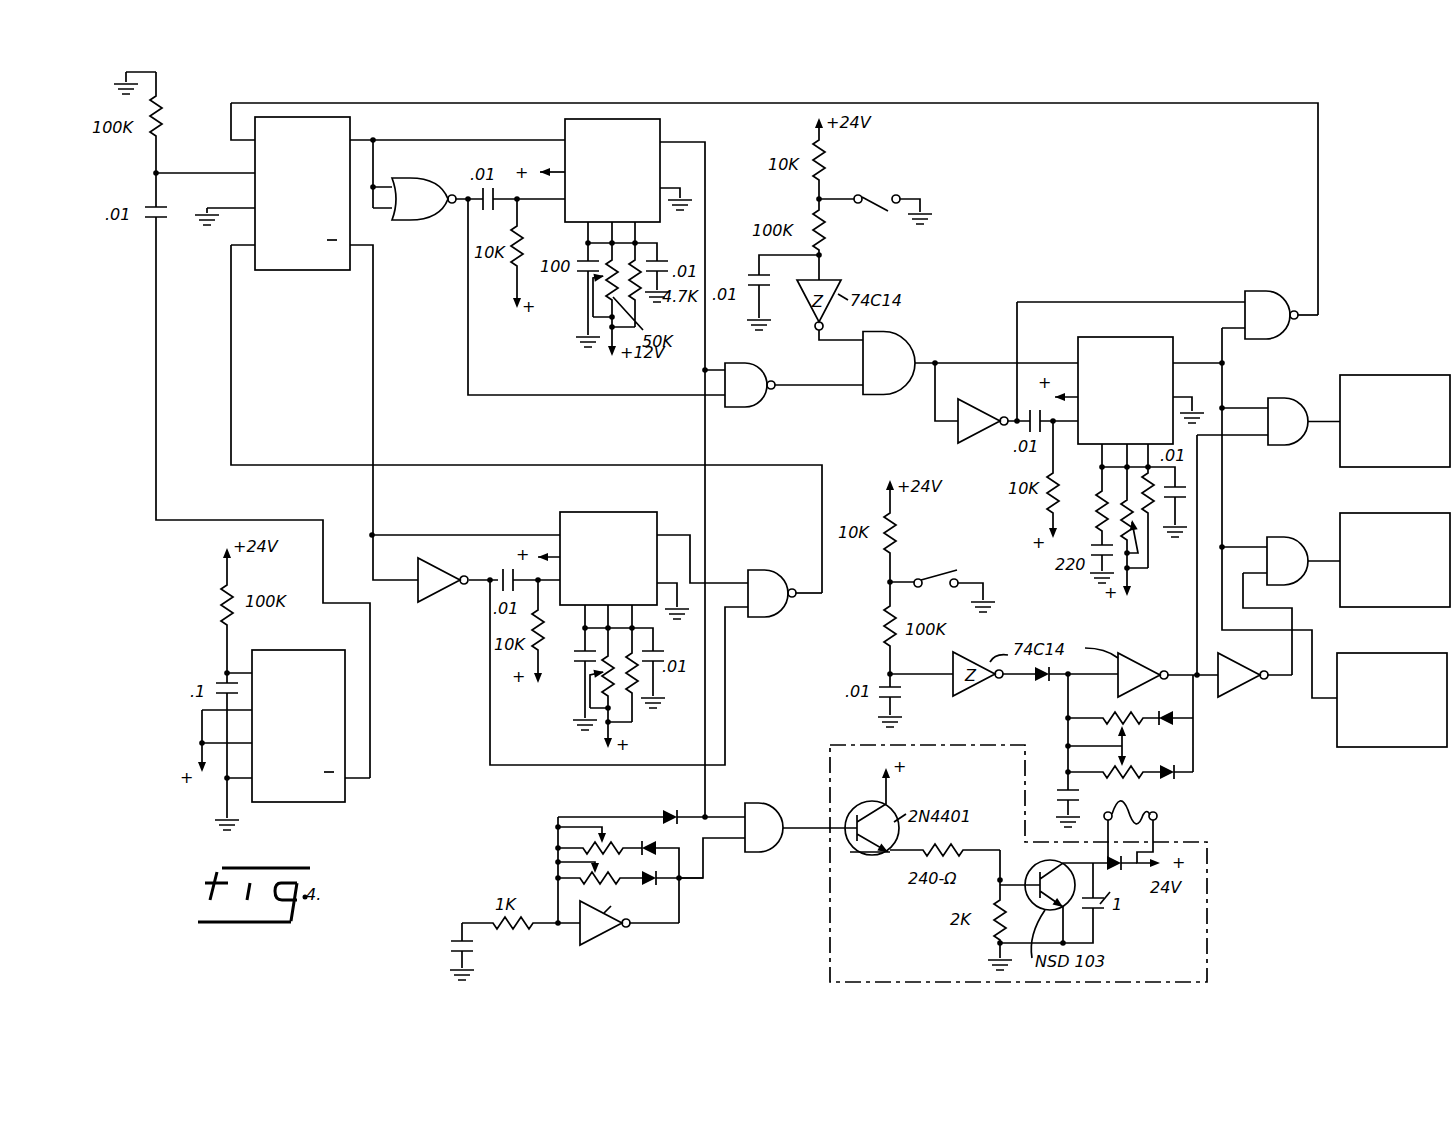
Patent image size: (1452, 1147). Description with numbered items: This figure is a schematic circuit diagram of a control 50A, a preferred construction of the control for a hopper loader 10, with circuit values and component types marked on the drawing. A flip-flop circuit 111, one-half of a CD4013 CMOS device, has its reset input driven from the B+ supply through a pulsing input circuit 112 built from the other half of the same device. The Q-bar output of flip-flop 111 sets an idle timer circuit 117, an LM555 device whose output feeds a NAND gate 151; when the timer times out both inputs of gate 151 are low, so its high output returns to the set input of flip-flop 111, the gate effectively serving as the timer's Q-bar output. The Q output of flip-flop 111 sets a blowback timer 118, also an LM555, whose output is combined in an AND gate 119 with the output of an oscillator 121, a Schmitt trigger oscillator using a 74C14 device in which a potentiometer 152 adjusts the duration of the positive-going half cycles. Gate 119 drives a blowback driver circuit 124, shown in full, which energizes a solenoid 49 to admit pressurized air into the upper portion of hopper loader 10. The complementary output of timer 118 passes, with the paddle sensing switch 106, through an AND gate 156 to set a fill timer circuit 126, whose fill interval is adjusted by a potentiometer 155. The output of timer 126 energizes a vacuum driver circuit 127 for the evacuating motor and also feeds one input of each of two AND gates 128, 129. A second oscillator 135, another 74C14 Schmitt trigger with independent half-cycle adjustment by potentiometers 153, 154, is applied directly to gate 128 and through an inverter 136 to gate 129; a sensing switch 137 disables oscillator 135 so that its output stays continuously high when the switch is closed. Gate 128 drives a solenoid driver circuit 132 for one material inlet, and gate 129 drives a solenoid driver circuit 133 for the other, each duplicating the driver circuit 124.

The hopper loader 10 is at (1056, 808).
The solenoid 49 is at (1135, 808).
The control 50A is at (990, 262).
The paddle sensing switch 106 is at (880, 211).
The flip-flop circuit 111 is at (318, 281).
The pulsing input circuit 112 is at (214, 662).
The idle timer circuit 117 is at (556, 513).
The blowback timer 118 is at (722, 92).
The AND gate 119 is at (766, 806).
The oscillator 121 is at (612, 940).
The blowback driver circuit 124 is at (1210, 864).
The fill timer circuit 126 is at (1200, 298).
The vacuum driver circuit 127 is at (1405, 752).
The AND gate 128 is at (1290, 528).
The AND gate 129 is at (1310, 382).
The solenoid driver circuit 132 is at (1406, 511).
The solenoid driver circuit 133 is at (1432, 374).
The oscillator 135 is at (1172, 628).
The inverter 136 is at (1234, 692).
The sensing switch 137 is at (932, 566).
The NAND gate 151 is at (775, 572).
The potentiometer 152 is at (605, 845).
The potentiometer 153 is at (1132, 775).
The potentiometer 154 is at (1112, 710).
The potentiometer 155 is at (1141, 551).
The AND gate 156 is at (916, 353).